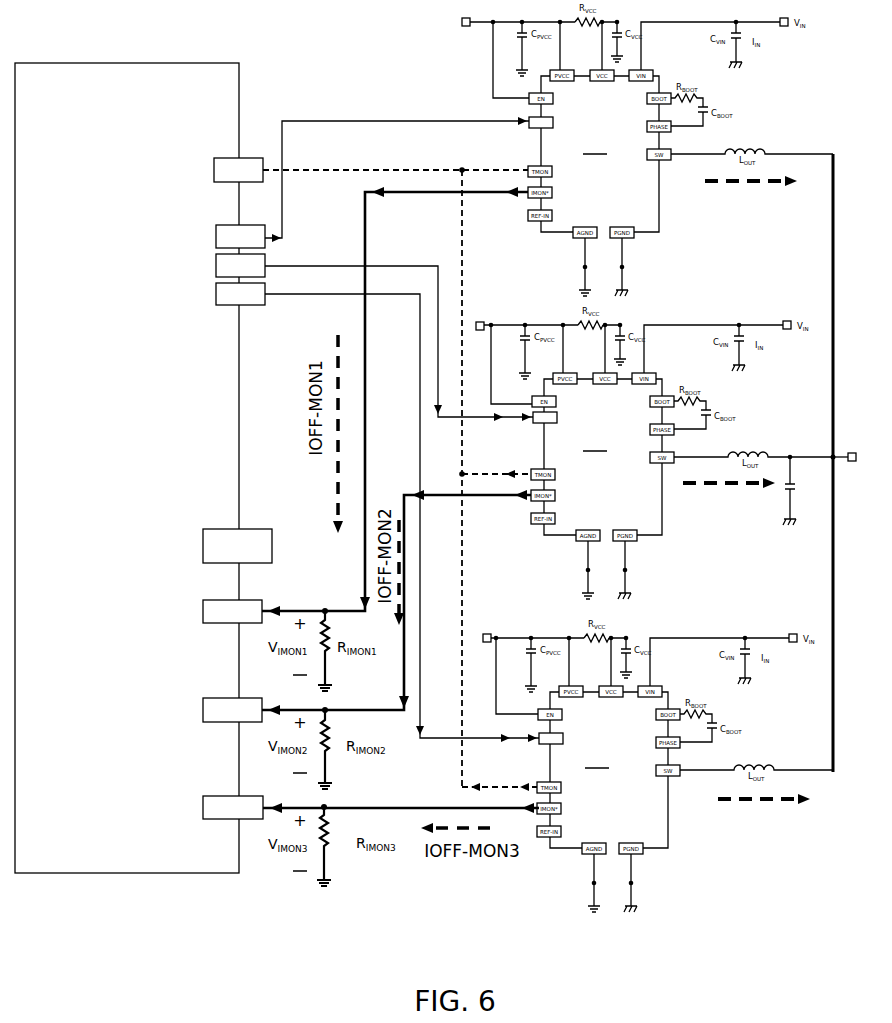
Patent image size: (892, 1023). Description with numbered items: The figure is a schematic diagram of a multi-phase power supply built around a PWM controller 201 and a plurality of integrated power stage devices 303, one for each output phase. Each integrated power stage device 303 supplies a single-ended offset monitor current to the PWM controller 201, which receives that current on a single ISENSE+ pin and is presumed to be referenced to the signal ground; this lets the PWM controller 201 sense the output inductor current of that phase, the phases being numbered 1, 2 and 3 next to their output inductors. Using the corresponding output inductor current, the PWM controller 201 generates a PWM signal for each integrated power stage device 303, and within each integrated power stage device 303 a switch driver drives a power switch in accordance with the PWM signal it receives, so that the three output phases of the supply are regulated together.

The PWM controller 201 is at (121, 124).
The integrated power stage device 303 is at (670, 457).
The phase 1 output inductor current ILOUT1 1 is at (751, 197).
The phase 2 output inductor current ILOUT2 2 is at (729, 499).
The phase 3 output inductor current ILOUT3 3 is at (764, 815).